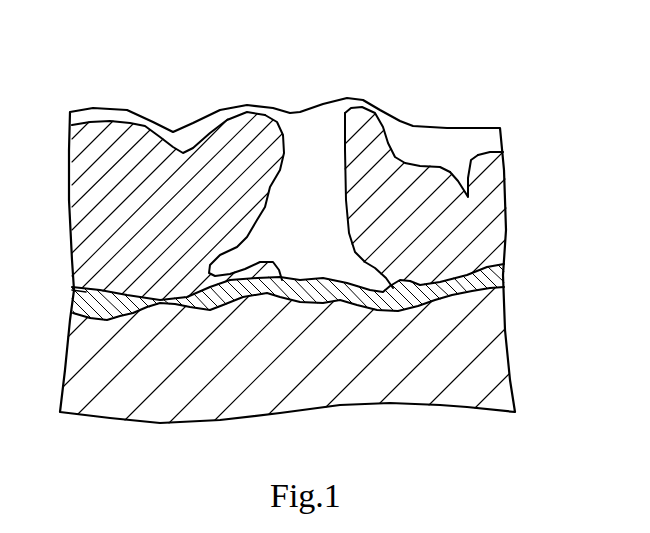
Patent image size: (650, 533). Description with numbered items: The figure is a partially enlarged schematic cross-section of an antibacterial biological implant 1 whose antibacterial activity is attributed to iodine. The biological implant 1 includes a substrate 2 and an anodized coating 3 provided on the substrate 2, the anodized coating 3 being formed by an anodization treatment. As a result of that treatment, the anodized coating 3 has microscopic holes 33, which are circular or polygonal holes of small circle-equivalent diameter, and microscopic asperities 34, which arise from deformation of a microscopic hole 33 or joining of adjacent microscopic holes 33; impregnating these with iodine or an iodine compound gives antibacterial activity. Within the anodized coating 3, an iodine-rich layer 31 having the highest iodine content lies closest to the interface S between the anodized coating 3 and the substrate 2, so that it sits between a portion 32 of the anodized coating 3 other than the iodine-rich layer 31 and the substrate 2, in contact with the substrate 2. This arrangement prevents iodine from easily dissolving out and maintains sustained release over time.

The biological implant 1 is at (508, 118).
The substrate 2 is at (482, 340).
The anodized coating 3 is at (350, 213).
The iodine-rich layer 31 is at (498, 275).
The portion of the anodized coating other than the iodine-rich layer 32 is at (487, 208).
The microscopic hole 33 is at (313, 148).
The microscopic asperity 34 is at (407, 160).
The interface S is at (103, 300).